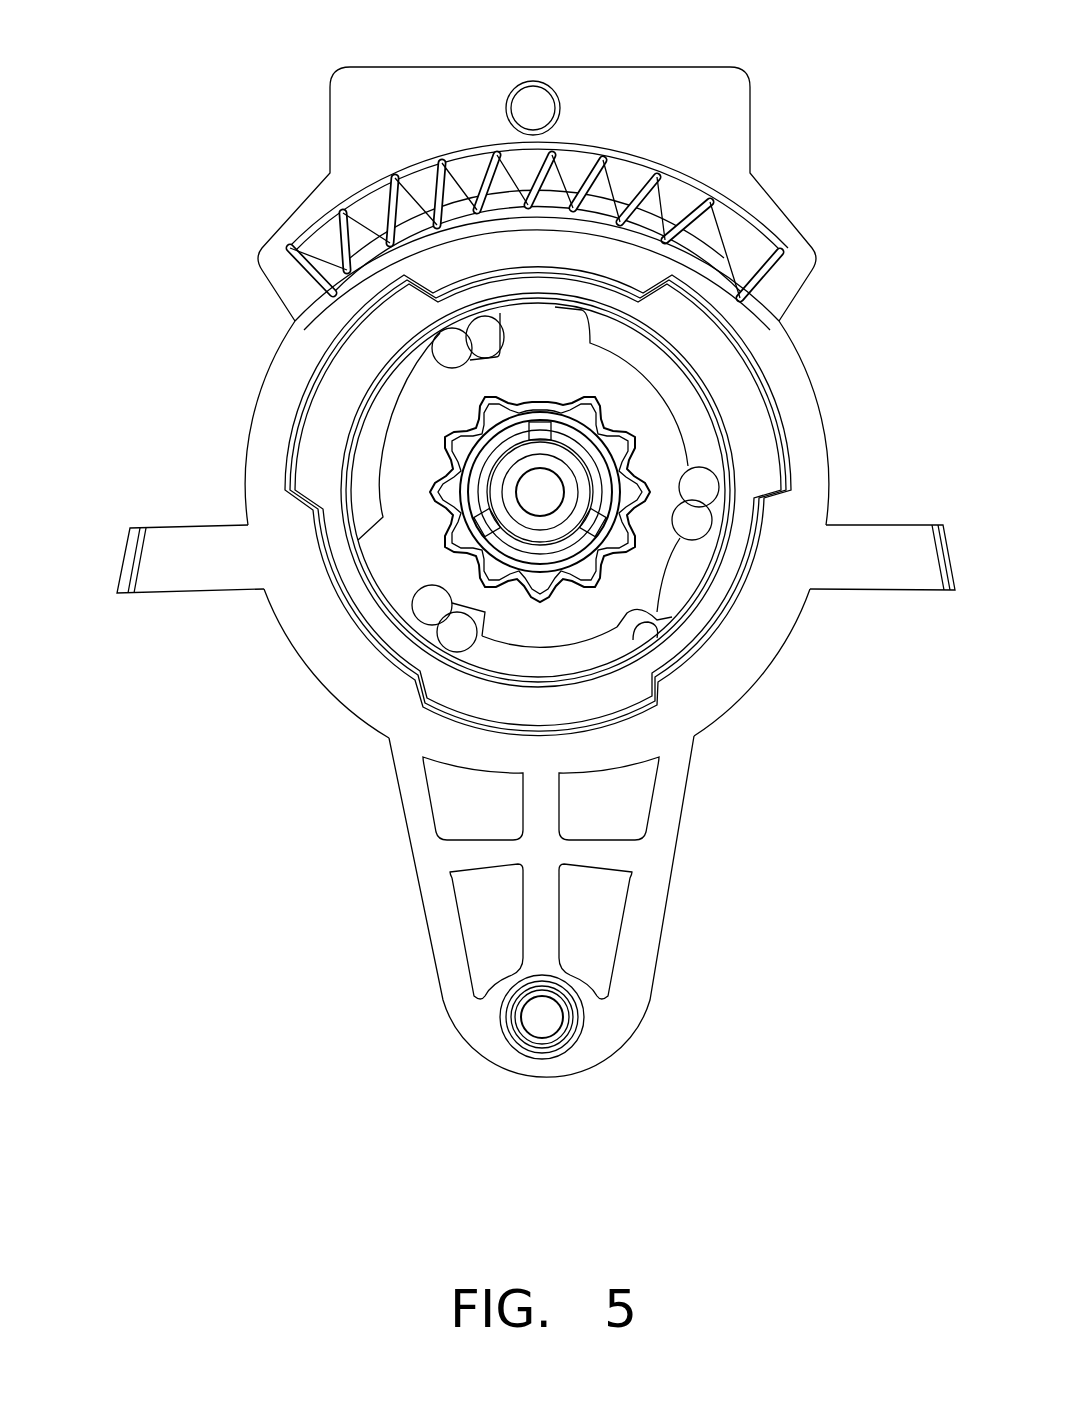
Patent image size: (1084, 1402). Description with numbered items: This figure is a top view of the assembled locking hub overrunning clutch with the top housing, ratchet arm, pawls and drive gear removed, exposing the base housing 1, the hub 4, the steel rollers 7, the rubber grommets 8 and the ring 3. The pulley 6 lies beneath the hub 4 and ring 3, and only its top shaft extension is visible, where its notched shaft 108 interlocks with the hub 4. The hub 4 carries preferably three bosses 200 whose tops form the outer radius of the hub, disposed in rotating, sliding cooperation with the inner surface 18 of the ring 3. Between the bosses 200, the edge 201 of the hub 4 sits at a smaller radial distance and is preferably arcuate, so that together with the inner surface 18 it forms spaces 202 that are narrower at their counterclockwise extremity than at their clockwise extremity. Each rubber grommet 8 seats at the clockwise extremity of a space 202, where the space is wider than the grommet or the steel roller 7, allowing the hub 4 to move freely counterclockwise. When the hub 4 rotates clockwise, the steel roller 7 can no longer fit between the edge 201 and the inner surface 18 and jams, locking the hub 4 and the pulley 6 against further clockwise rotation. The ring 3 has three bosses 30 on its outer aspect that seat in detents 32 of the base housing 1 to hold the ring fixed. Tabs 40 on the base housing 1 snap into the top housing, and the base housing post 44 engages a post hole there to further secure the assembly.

The base housing 1 is at (690, 80).
The ring 3 is at (720, 377).
The hub 4 is at (580, 622).
The pulley 6 is at (563, 428).
The steel roller 7 is at (703, 487).
The rubber grommet 8 is at (697, 520).
The inner surface of ring 18 is at (650, 638).
The bosses of ring 30 is at (337, 375).
The seating detents 32 is at (292, 413).
The tabs 40 is at (205, 585).
The base housing post 44 is at (545, 1022).
The notched shaft 108 is at (445, 490).
The bosses of hub 200 is at (680, 577).
The edge of hub 201 is at (620, 627).
The spaces 202 is at (717, 425).